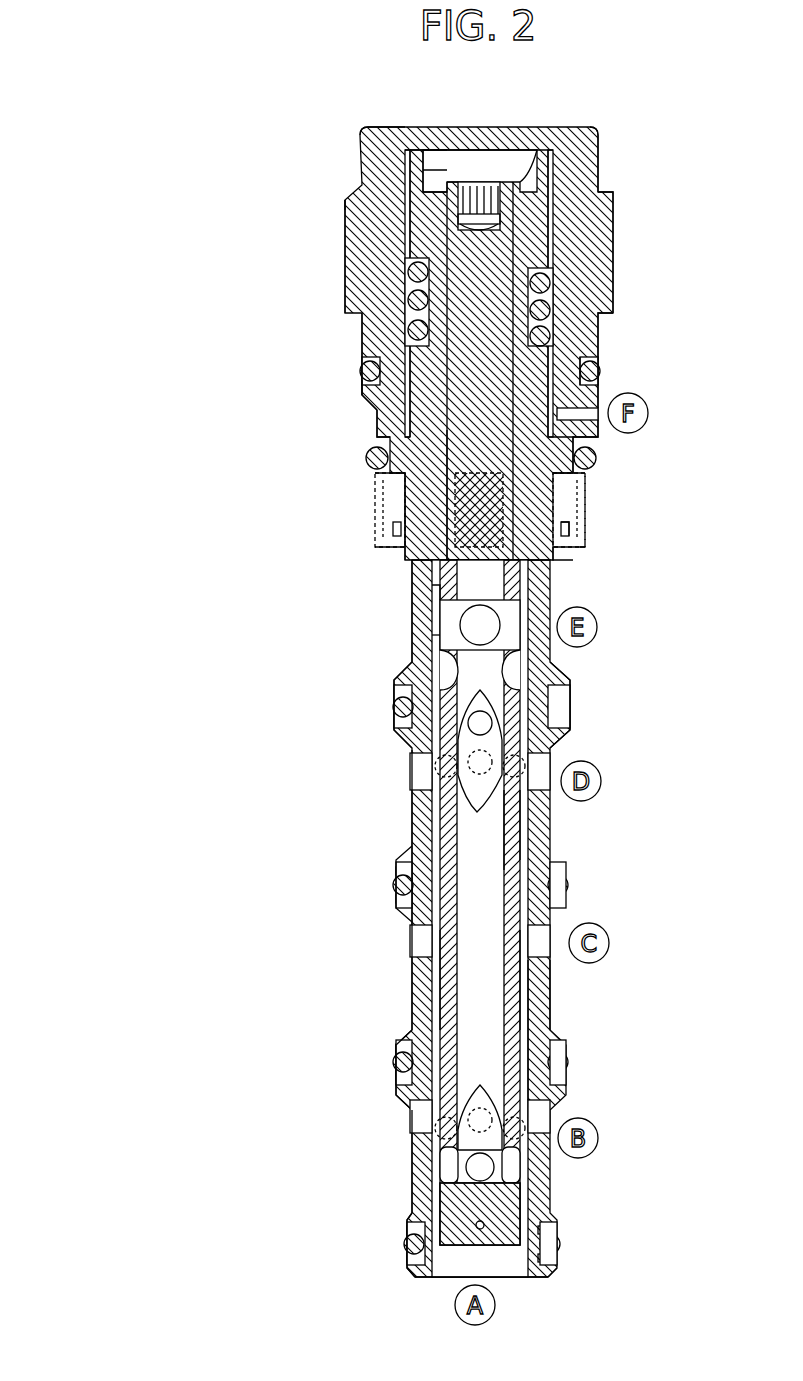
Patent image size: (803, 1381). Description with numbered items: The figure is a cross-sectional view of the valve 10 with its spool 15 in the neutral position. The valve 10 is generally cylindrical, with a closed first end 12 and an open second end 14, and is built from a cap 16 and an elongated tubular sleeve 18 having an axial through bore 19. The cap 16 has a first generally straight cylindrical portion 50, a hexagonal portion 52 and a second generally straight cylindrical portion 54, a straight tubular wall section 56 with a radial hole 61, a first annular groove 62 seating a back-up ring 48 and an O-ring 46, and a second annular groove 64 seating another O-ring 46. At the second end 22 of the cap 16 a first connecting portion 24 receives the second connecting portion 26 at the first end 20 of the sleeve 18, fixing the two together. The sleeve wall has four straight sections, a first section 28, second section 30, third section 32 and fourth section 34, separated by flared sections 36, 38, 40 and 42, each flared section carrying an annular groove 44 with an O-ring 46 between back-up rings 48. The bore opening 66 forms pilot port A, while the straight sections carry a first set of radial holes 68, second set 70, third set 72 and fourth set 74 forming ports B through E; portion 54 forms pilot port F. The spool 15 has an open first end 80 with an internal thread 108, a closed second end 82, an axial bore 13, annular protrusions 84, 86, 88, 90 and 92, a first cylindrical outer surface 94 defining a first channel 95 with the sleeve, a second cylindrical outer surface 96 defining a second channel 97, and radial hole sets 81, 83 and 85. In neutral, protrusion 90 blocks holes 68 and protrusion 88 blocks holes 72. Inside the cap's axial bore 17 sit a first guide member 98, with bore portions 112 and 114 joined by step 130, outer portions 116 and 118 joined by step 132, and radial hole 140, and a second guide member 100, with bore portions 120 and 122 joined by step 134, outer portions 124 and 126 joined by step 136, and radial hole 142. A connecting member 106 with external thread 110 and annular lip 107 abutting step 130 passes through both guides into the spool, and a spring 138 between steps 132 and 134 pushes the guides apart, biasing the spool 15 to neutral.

The valve 10 is at (160, 602).
The first end 12 is at (605, 122).
The axial bore 13 is at (548, 862).
The second end 14 is at (600, 1305).
The spool 15 is at (560, 1022).
The cap 16 is at (335, 238).
The axial bore 17 is at (551, 290).
The sleeve 18 is at (552, 985).
The axial through bore 19 is at (552, 835).
The first end 20 is at (378, 478).
The second end 22 is at (575, 566).
The first connecting portion 24 is at (478, 540).
The second connecting portion 26 is at (582, 515).
The first generally straight tubular section 28 is at (440, 1200).
The second generally straight tubular section 30 is at (420, 990).
The third generally straight tubular section 32 is at (412, 805).
The fourth generally straight tubular section 34 is at (455, 598).
The first flared tubular section 36 is at (378, 1244).
The second flared tubular section 38 is at (360, 1045).
The third flared tubular section 40 is at (357, 866).
The fourth flared tubular section 42 is at (372, 696).
The annular groove 44 is at (394, 728).
The O-ring 46 is at (361, 366).
The back-up ring 48 is at (599, 378).
The first generally straight cylindrical portion 50 is at (612, 140).
The hexagonal portion 52 is at (549, 235).
The second generally straight cylindrical portion 54 is at (598, 378).
The generally straight tubular section 56 is at (437, 446).
The radial hole 61 is at (590, 440).
The first annular groove 62 is at (362, 362).
The second annular groove 64 is at (588, 484).
The opening 66 is at (560, 1282).
The first set of radial holes 68 is at (480, 1085).
The second set of radial holes 70 is at (421, 940).
The third set of radial holes 72 is at (411, 772).
The fourth set of radial holes 74 is at (440, 642).
The first end 80 is at (413, 403).
The first set of radial holes 81 is at (425, 648).
The second end 82 is at (445, 1250).
The second set of radial holes 83 is at (481, 711).
The first annular protrusion 84 is at (420, 538).
The third set of radial holes 85 is at (442, 1168).
The second annular protrusion 86 is at (571, 700).
The third annular protrusion 88 is at (428, 765).
The fourth annular protrusion 90 is at (420, 1118).
The fifth annular protrusion 92 is at (552, 1230).
The first cylindrical outer surface 94 is at (470, 611).
The first channel 95 is at (420, 632).
The second cylindrical outer surface 96 is at (428, 898).
The second channel 97 is at (433, 975).
The first guide member 98 is at (408, 268).
The second guide member 100 is at (396, 392).
The connecting member 106 is at (453, 176).
The annular lip 107 is at (432, 168).
The internal thread 108 is at (580, 536).
The external thread 110 is at (381, 487).
The first bore portion 112 is at (540, 150).
The second bore portion 114 is at (605, 198).
The first cylindrical outer portion 116 is at (412, 162).
The second cylindrical outer portion 118 is at (409, 268).
The first bore portion 120 is at (551, 322).
The second bore portion 122 is at (430, 440).
The first cylindrical outer portion 124 is at (409, 298).
The second cylindrical outer portion 126 is at (598, 400).
The step 130 is at (498, 150).
The step 132 is at (551, 258).
The step 134 is at (583, 378).
The step 136 is at (578, 492).
The spring 138 is at (400, 222).
The radial hole 140 is at (408, 152).
The radial hole 142 is at (574, 470).